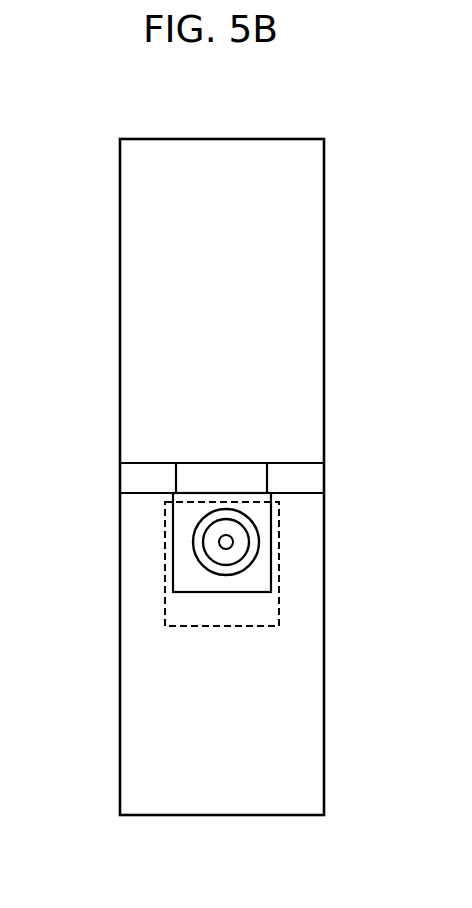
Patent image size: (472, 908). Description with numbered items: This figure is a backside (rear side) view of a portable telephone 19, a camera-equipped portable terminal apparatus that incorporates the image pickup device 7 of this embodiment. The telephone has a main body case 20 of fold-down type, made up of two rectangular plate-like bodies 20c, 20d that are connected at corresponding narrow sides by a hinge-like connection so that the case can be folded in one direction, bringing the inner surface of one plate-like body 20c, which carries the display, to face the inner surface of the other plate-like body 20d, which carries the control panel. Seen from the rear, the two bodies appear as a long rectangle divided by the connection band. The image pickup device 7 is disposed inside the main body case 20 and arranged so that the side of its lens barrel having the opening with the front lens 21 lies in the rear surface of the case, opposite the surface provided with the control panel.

The portable telephone 19 is at (332, 218).
The main body case 20 is at (118, 323).
The plate-like body 20c is at (127, 250).
The plate-like body 20d is at (132, 713).
The image pickup device 7 is at (165, 578).
The front lens 21 is at (229, 541).